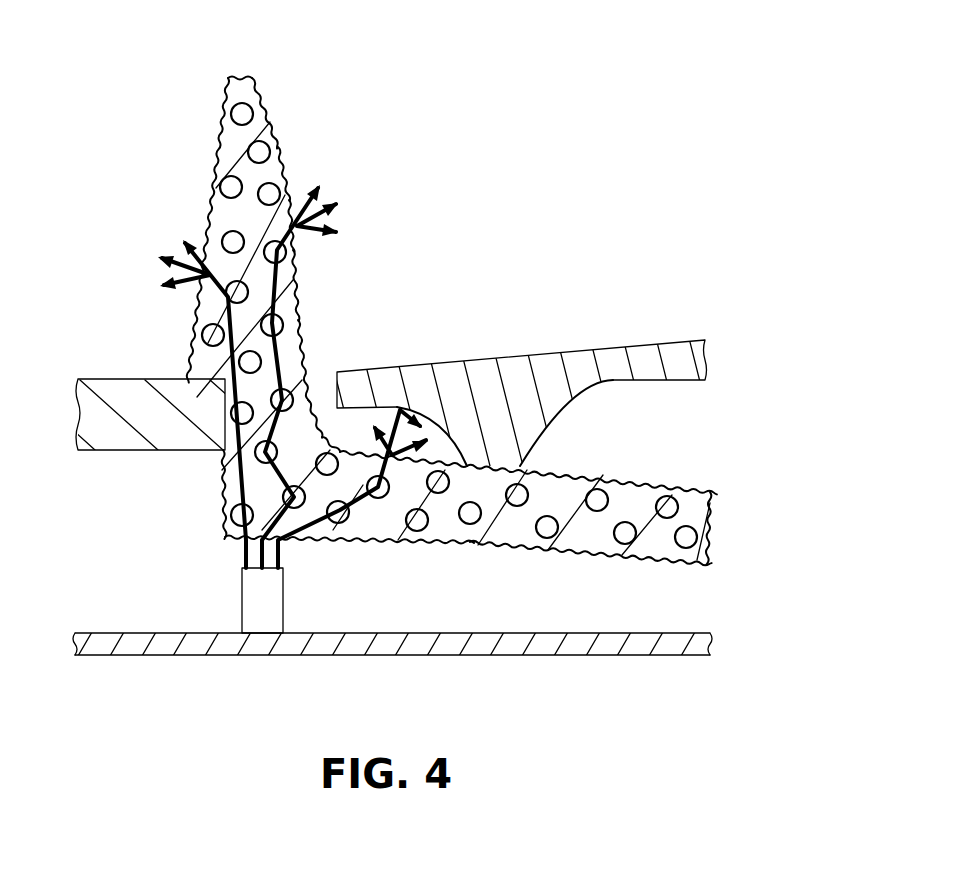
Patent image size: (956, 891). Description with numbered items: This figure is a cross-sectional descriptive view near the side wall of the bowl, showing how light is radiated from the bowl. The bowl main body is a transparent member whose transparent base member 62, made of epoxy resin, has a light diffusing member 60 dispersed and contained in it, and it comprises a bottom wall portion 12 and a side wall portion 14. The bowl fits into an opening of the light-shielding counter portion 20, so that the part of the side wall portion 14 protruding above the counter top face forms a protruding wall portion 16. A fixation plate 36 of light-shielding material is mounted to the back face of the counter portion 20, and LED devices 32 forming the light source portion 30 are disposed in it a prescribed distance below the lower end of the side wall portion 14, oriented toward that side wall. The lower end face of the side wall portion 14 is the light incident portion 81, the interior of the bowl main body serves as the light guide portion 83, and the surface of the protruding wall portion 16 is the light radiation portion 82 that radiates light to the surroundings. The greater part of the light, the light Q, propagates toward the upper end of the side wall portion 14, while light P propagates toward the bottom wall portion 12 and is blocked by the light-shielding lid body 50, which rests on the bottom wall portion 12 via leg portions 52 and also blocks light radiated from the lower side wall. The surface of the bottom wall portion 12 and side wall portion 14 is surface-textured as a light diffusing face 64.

The bottom wall portion 12 is at (573, 545).
The side wall portion 14 is at (288, 97).
The protruding wall portion 16 is at (213, 184).
The counter portion 20 is at (117, 425).
The light source portion 30 is at (188, 628).
The LED devices 32 is at (240, 575).
The fixation plate 36 is at (333, 653).
The light-shielding lid body 50 is at (608, 363).
The leg portions 52 is at (521, 440).
The light diffusing member 60 is at (415, 525).
The transparent base member 62 is at (506, 530).
The light diffusing face 64 is at (283, 146).
The light incident portion 81 is at (232, 560).
The light radiation portion 82 is at (314, 175).
The light guide portion 83 is at (316, 352).
The light P is at (362, 490).
The light Q is at (207, 317).